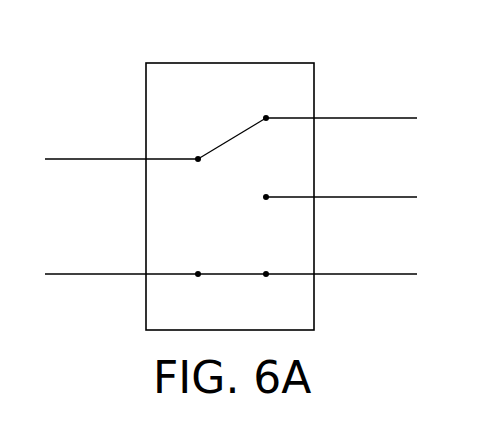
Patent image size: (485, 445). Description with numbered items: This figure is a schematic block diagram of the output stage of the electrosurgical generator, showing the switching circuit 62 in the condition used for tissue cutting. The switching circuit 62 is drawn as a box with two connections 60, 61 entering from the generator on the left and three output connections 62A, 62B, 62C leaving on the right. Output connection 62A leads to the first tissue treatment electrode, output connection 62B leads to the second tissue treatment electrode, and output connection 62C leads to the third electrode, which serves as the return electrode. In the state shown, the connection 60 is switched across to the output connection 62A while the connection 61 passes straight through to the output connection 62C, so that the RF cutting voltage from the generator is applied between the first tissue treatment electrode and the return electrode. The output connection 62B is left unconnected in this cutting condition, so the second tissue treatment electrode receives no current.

The switching circuit 62 is at (166, 62).
The connection from the generator 60 is at (66, 158).
The connection from the generator 61 is at (66, 273).
The output connection 62A is at (383, 117).
The output connection 62B is at (383, 196).
The output connection 62C is at (383, 273).